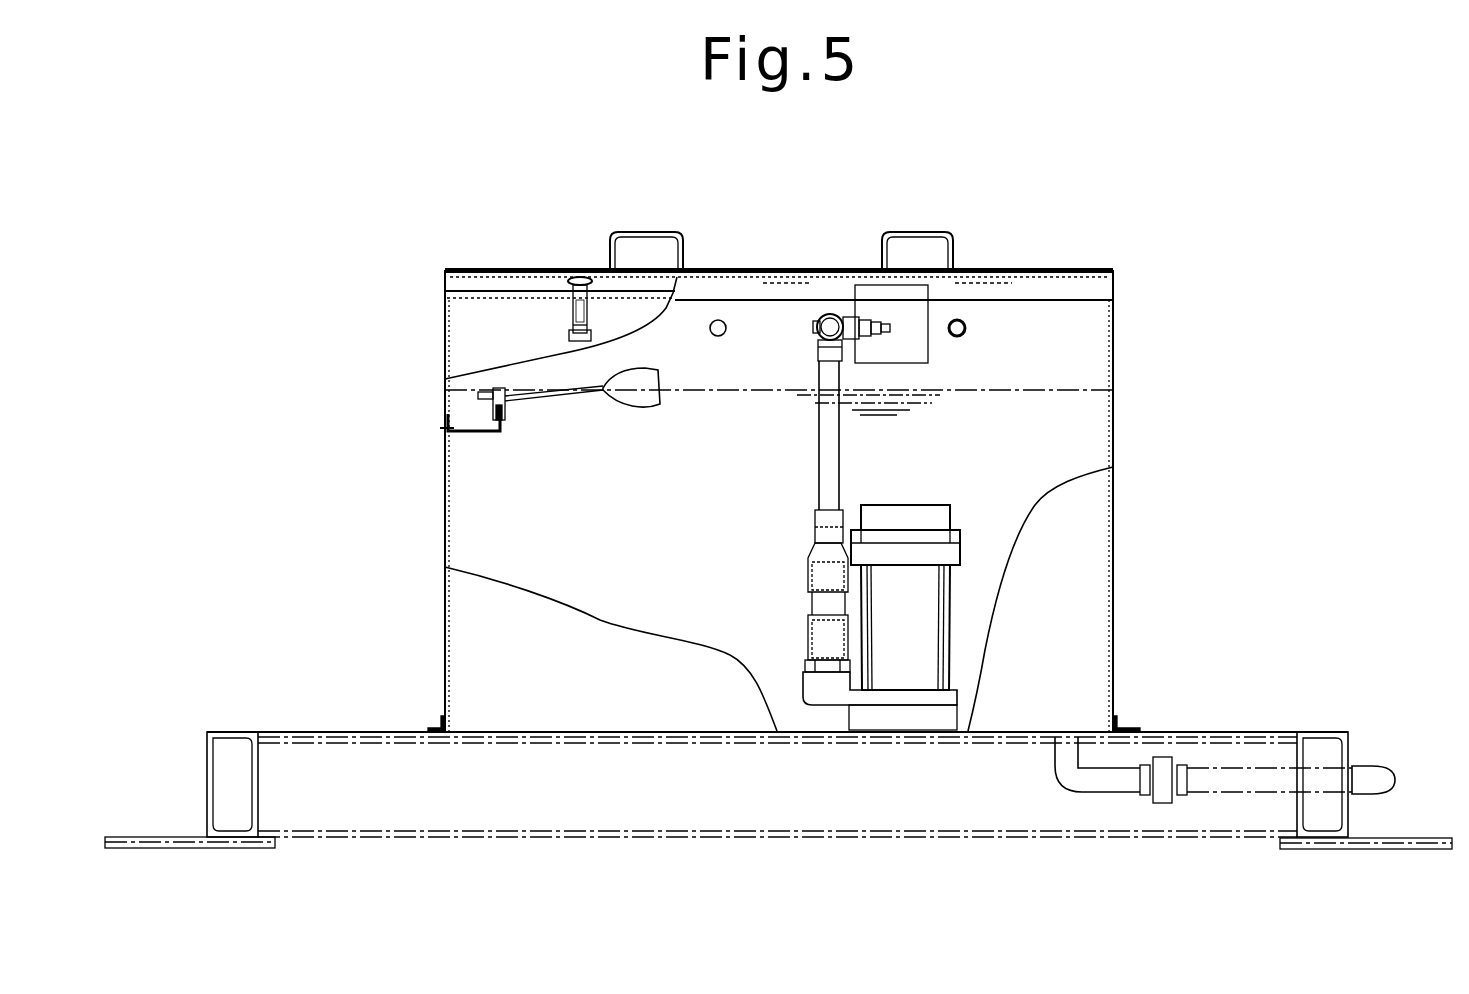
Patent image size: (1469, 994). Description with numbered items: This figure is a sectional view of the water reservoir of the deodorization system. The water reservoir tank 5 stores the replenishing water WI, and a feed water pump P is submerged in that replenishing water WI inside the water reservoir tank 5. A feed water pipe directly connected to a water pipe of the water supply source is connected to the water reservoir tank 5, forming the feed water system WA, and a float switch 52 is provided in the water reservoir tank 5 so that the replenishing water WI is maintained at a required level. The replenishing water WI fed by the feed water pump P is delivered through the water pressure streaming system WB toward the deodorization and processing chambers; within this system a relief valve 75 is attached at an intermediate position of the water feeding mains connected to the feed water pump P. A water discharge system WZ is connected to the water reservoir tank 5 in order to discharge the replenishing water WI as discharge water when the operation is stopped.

The water reservoir tank 5 is at (717, 292).
The feed water system WA is at (719, 326).
The water pressure streaming system WB is at (823, 455).
The relief valve 75 is at (910, 295).
The replenishing water WI is at (1058, 428).
The feed water pump P is at (920, 605).
The float switch 52 is at (632, 402).
The water discharge system WZ is at (1377, 783).